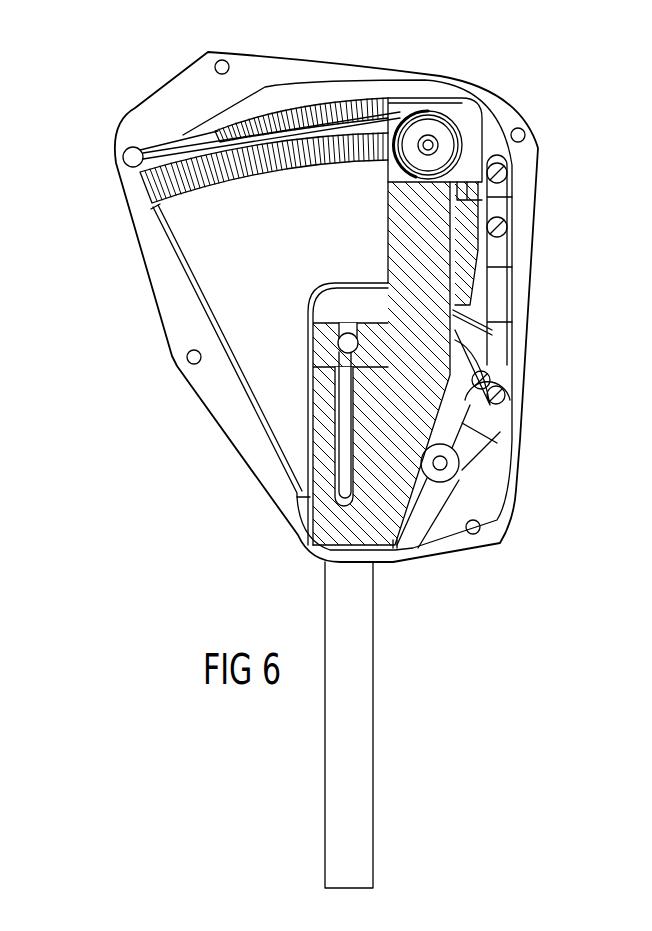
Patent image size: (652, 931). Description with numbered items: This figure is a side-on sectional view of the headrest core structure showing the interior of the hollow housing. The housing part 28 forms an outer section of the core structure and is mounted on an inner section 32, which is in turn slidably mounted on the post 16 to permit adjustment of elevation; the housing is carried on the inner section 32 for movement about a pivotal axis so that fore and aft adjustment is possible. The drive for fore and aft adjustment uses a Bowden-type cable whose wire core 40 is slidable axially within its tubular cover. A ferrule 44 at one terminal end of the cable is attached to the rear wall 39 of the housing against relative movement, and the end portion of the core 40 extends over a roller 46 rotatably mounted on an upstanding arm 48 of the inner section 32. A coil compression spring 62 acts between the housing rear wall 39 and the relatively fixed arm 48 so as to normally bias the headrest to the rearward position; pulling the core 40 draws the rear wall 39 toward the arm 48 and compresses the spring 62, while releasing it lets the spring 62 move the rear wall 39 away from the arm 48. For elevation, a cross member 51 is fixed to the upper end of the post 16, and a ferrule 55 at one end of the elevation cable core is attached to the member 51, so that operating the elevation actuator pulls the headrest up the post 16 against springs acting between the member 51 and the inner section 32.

The post 16 is at (357, 680).
The housing part 28 is at (542, 175).
The inner section 32 is at (393, 493).
The rear wall 39 is at (162, 291).
The wire core 40 is at (250, 140).
The ferrule 44 is at (121, 158).
The roller 46 is at (445, 125).
The upstanding arm 48 is at (402, 233).
The cross member 51 is at (330, 353).
The ferrule 55 is at (308, 305).
The coil compression spring 62 is at (222, 163).